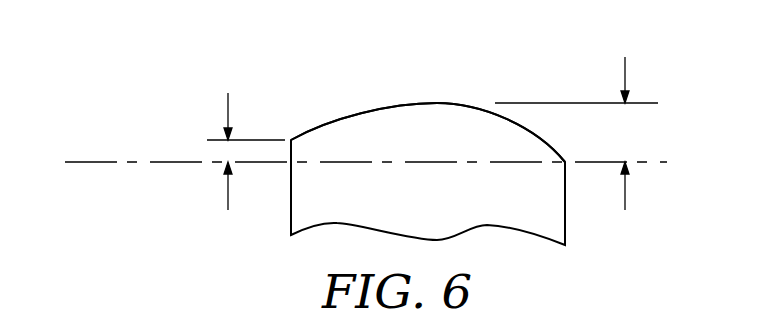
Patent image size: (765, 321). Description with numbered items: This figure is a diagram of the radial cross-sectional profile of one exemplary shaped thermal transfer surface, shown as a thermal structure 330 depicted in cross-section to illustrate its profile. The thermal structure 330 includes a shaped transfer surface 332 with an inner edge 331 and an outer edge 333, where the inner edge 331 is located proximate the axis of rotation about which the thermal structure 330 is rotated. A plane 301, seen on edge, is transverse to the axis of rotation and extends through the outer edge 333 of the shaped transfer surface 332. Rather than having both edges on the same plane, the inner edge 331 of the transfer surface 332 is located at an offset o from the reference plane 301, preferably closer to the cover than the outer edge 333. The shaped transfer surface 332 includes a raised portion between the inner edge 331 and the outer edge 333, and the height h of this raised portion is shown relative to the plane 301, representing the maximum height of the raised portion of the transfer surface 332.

The plane 301 is at (108, 160).
The thermal structure 330 is at (567, 222).
The inner edge 331 is at (291, 140).
The shaped transfer surface 332 is at (433, 103).
The outer edge 333 is at (566, 161).
The offset o is at (228, 103).
The height h is at (625, 67).